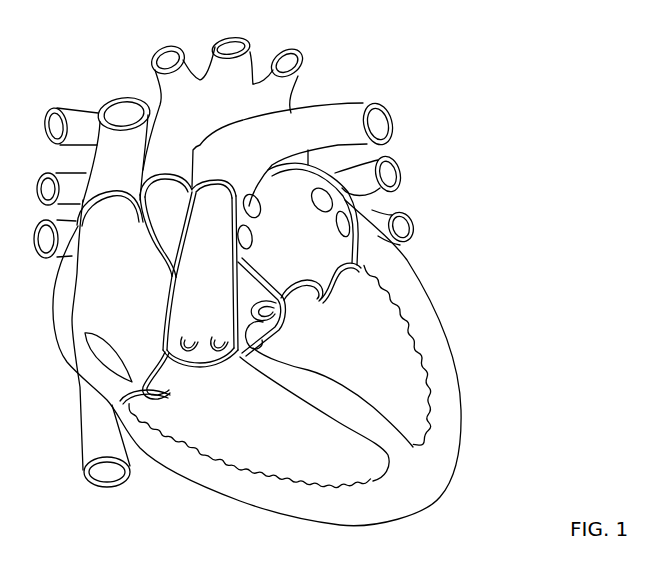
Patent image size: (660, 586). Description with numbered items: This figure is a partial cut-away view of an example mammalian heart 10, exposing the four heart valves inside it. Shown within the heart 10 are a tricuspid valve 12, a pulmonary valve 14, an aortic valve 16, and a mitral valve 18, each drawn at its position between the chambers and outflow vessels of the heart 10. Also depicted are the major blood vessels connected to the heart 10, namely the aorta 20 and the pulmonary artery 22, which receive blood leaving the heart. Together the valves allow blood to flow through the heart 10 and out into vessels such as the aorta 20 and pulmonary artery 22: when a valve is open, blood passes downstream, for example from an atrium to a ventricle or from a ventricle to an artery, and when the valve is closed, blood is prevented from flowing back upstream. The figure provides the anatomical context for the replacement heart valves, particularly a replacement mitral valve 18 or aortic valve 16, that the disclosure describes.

The heart 10 is at (262, 278).
The tricuspid valve 12 is at (134, 378).
The pulmonary valve 14 is at (200, 372).
The aortic valve 16 is at (278, 328).
The mitral valve 18 is at (324, 264).
The aorta 20 is at (247, 93).
The pulmonary artery 22 is at (338, 121).